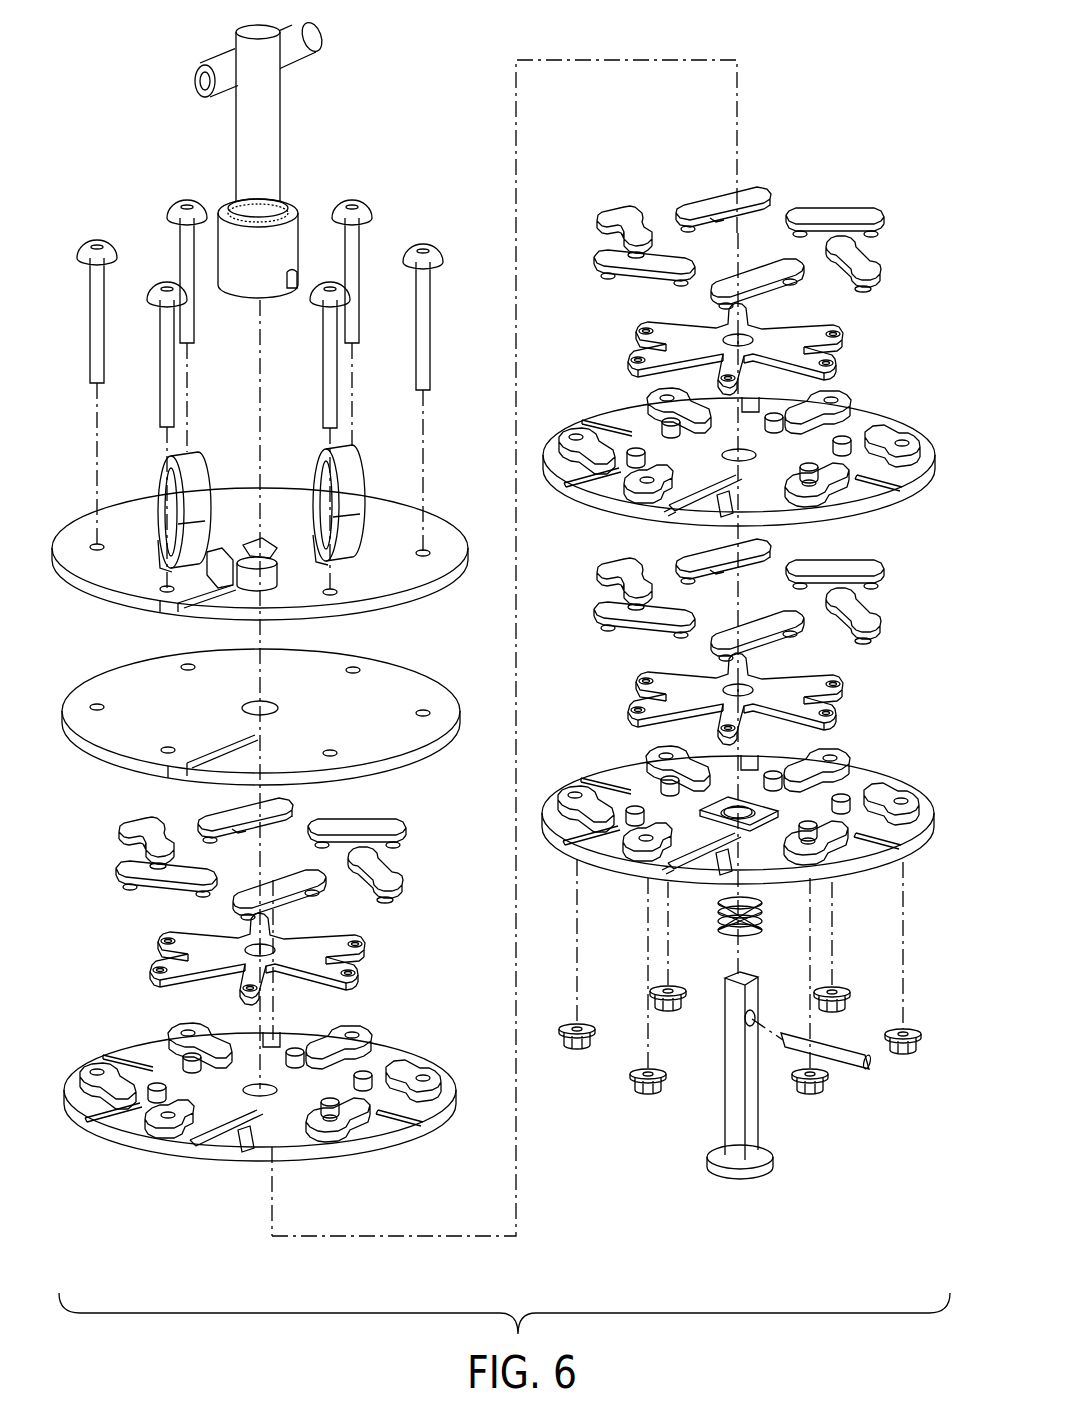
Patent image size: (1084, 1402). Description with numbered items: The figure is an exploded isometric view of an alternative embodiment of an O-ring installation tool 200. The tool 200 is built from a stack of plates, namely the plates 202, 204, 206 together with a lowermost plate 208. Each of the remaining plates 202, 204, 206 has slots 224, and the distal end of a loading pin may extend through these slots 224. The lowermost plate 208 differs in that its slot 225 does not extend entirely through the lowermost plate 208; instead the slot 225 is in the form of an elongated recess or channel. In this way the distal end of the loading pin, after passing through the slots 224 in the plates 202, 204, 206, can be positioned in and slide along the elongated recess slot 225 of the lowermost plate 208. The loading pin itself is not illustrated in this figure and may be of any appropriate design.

The tool 200 is at (855, 93).
The plate 202 is at (418, 752).
The plate 204 is at (448, 1113).
The plate 206 is at (933, 465).
The lowermost plate 208 is at (933, 820).
The slots 224 is at (663, 510).
The slot 225 is at (658, 875).